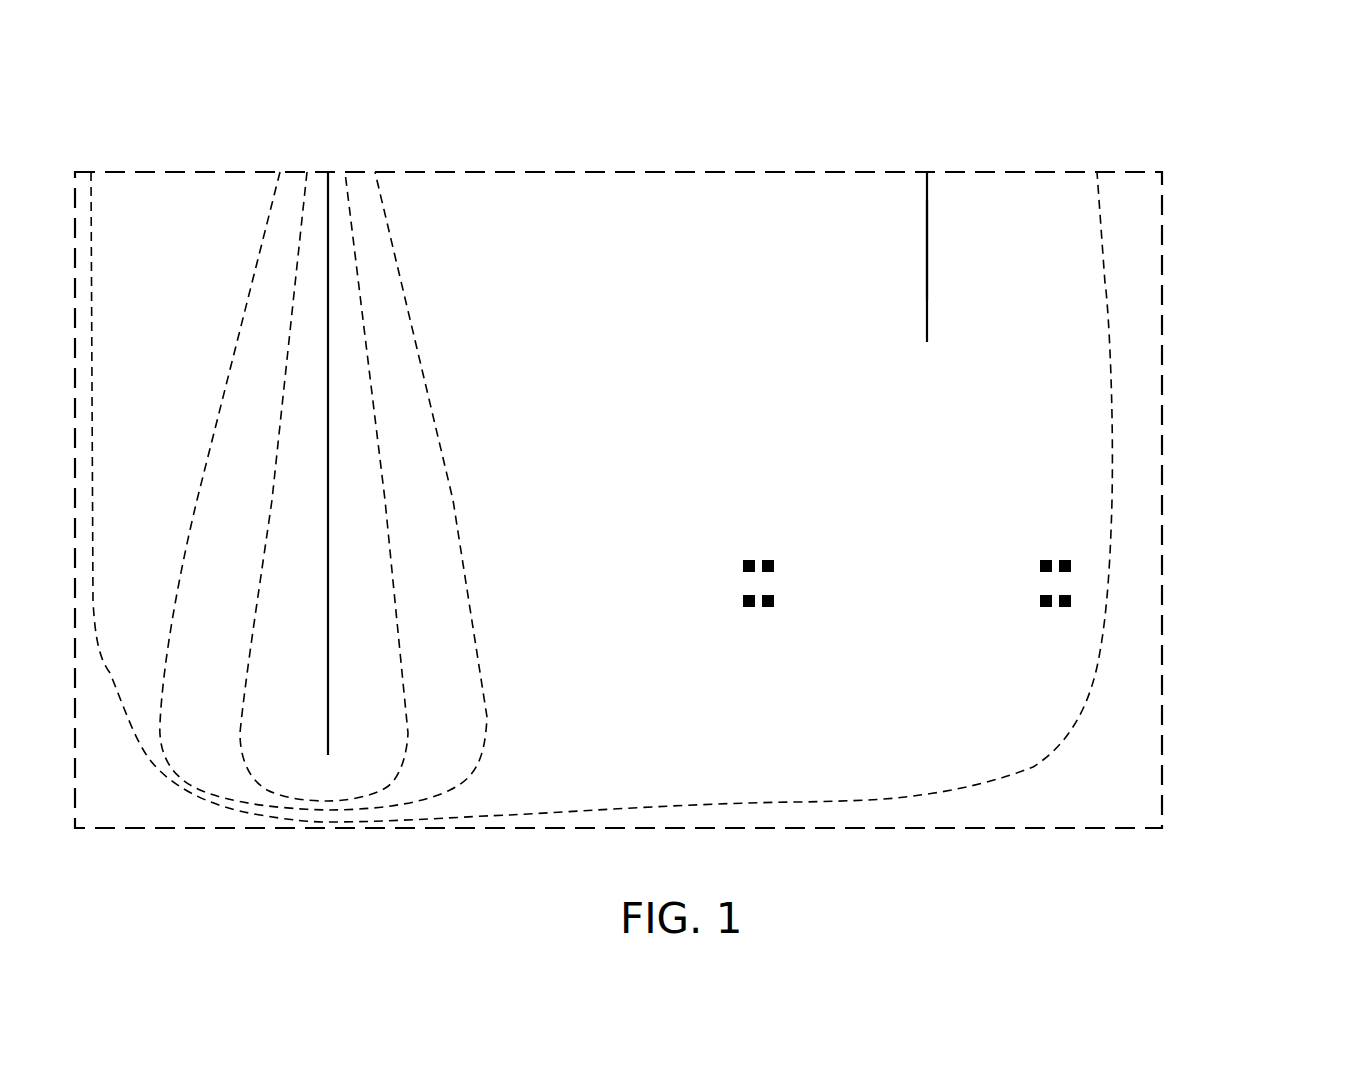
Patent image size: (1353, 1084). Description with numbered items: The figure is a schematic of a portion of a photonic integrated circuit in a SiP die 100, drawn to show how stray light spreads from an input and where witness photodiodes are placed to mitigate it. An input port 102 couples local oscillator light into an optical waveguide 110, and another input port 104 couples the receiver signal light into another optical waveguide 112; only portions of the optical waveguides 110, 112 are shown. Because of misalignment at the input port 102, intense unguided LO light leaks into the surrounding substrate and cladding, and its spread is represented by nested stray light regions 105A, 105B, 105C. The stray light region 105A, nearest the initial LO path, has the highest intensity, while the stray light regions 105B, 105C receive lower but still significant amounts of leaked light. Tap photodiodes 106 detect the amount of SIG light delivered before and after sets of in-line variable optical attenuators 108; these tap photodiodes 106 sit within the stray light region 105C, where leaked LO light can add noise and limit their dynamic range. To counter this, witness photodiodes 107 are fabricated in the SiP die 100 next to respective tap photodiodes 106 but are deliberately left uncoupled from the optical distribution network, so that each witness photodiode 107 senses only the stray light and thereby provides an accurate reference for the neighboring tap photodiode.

The SiP die 100 is at (1118, 137).
The input port 102 is at (328, 172).
The input port 104 is at (927, 173).
The stray light region 105A is at (318, 727).
The stray light region 105B is at (245, 622).
The stray light region 105C is at (612, 453).
The tap photodiodes 106 is at (779, 592).
The witness photodiodes 107 is at (1023, 578).
The variable optical attenuators 108 is at (992, 350).
The optical waveguide 110 is at (340, 680).
The optical waveguide 112 is at (935, 250).